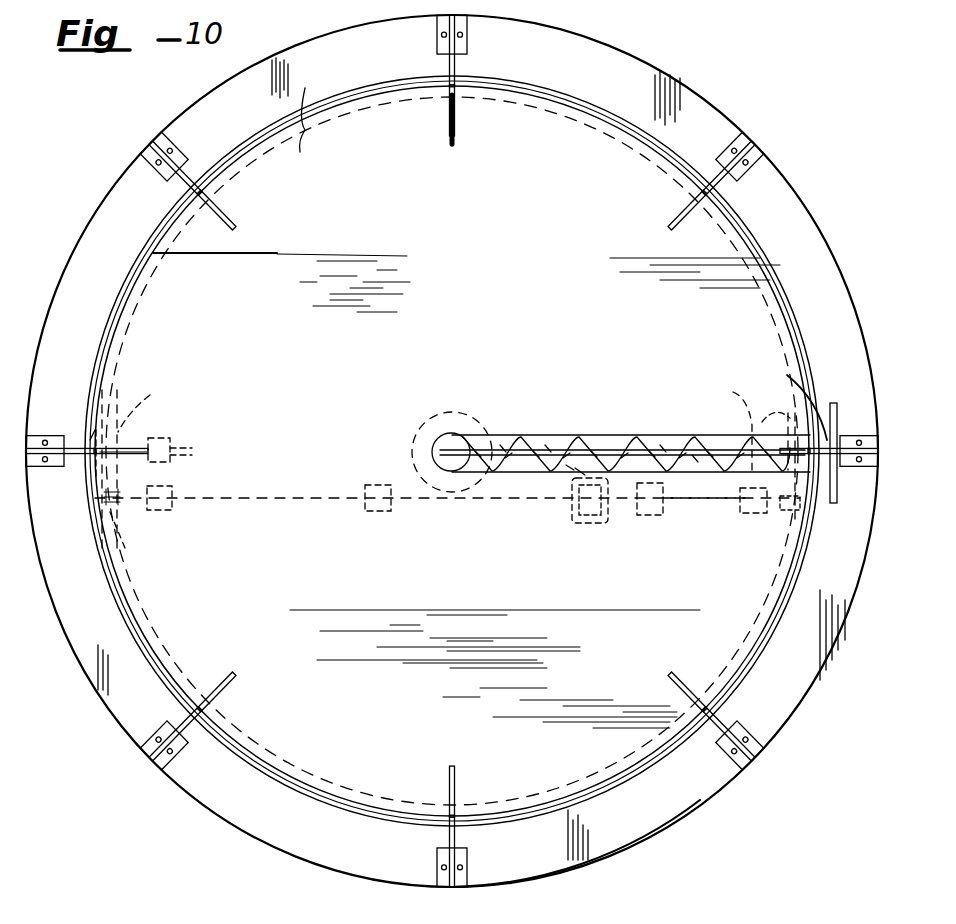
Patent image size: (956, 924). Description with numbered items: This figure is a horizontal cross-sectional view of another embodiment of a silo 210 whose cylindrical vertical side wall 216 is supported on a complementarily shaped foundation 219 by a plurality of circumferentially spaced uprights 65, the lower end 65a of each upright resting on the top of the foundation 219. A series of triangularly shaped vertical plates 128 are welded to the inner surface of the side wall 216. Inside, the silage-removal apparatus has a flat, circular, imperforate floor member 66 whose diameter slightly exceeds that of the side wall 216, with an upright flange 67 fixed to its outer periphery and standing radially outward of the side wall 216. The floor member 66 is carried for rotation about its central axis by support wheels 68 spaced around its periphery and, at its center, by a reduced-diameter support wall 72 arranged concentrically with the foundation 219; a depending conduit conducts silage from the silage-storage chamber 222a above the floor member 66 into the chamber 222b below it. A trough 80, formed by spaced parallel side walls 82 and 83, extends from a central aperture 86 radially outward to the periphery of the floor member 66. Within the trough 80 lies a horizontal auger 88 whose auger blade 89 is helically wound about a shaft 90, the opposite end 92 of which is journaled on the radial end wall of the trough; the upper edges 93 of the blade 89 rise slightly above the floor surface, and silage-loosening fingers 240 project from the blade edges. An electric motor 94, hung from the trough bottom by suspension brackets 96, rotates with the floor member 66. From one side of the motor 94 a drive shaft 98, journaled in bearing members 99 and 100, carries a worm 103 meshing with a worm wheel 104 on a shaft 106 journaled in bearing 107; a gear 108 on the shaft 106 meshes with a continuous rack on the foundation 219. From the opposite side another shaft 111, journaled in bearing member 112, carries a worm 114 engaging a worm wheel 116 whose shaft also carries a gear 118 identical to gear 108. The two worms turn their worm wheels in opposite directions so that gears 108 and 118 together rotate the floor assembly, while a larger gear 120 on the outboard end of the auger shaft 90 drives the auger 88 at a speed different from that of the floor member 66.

The upright 65 is at (458, 68).
The lower end of upright 65a is at (438, 36).
The floor member 66 is at (536, 288).
The upright flange 67 is at (92, 422).
The support wheels 68 is at (595, 185).
The support wall 72 is at (412, 451).
The trough 80 is at (648, 436).
The side wall of trough 82 is at (557, 436).
The side wall of trough 83 is at (576, 471).
The central aperture 86 is at (448, 433).
The auger 88 is at (673, 436).
The auger blade 89 is at (515, 436).
The auger shaft 90 is at (572, 441).
The opposite end of auger shaft 92 is at (794, 377).
The upper edges of auger blade 93 is at (550, 436).
The motor 94 is at (650, 520).
The suspension brackets 96 is at (600, 524).
The drive shaft 98 is at (276, 494).
The bearing member 99 is at (175, 506).
The bearing member 100 is at (373, 512).
The worm 103 is at (121, 505).
The worm wheel 104 is at (145, 401).
The shaft 106 is at (152, 438).
The bearing 107 is at (188, 441).
The gear 108 is at (95, 395).
The shaft 111 is at (698, 506).
The bearing member 112 is at (742, 514).
The worm 114 is at (782, 508).
The worm wheel 116 is at (774, 405).
The gear 118 is at (725, 417).
The gear 120 is at (832, 402).
The vertical plates 128 is at (460, 125).
The silo 210 is at (668, 64).
The vertical side wall 216 is at (578, 101).
The foundation 219 is at (672, 830).
The silage-storage chamber 222a is at (325, 107).
The chamber 222b is at (145, 287).
The silage-loosening fingers 240 is at (696, 448).